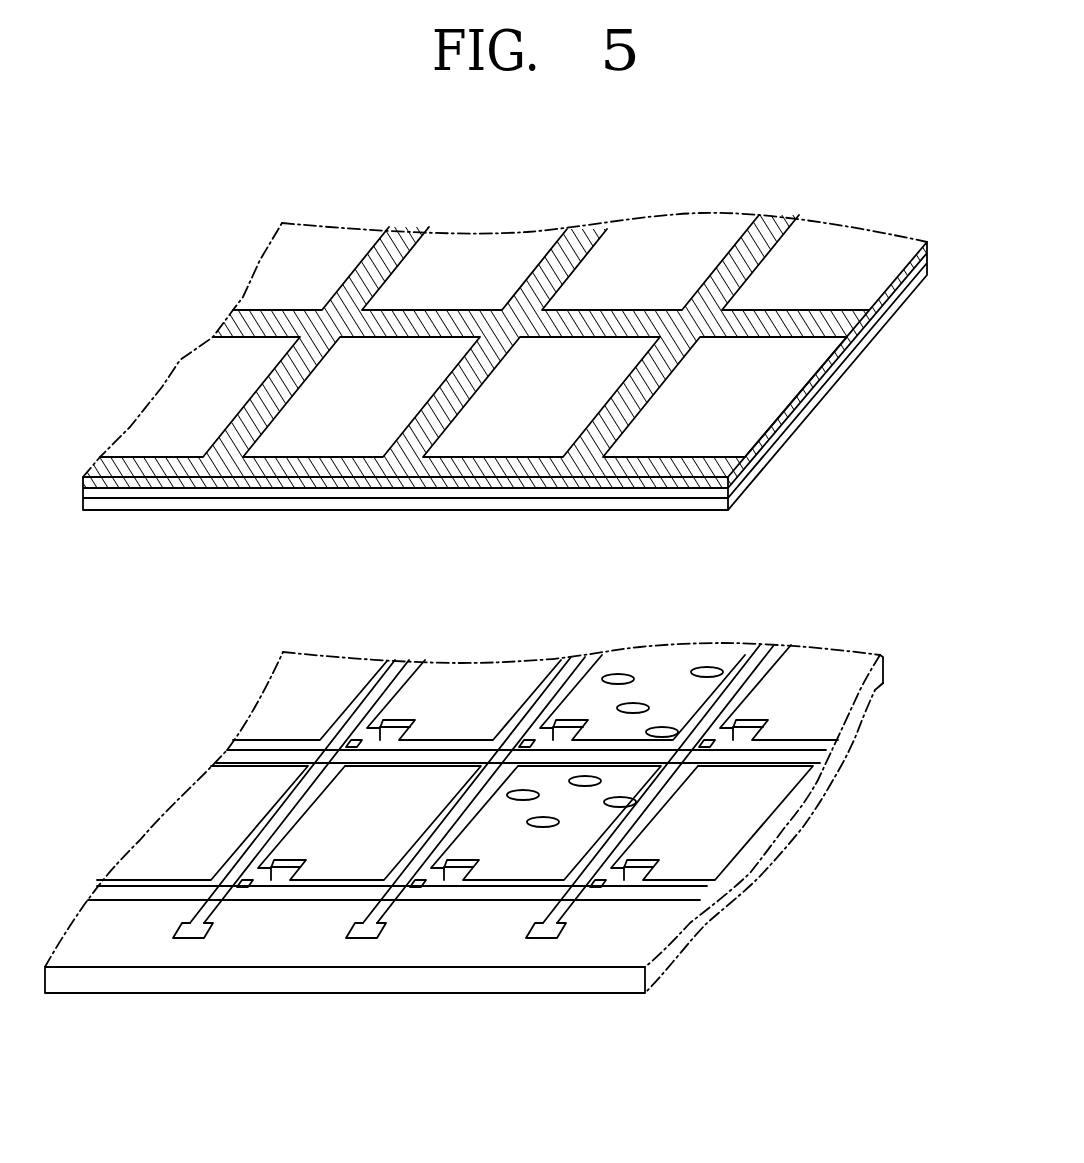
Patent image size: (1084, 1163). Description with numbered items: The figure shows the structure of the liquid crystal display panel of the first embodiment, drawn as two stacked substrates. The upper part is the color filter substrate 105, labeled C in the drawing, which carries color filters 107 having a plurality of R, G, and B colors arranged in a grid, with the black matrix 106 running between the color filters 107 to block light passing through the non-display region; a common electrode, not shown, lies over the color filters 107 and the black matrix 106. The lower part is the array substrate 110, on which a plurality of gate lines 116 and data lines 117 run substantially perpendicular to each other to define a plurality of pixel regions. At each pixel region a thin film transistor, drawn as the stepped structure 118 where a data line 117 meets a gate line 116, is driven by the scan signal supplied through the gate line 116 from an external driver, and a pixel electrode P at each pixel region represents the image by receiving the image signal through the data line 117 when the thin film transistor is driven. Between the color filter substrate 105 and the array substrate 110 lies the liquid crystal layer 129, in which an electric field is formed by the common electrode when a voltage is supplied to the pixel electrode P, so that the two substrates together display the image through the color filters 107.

The color filter substrate C is at (178, 347).
The color filter substrate 105 is at (700, 495).
The black matrix 106 is at (717, 467).
The color filters 107 is at (782, 375).
The array substrate 110 is at (455, 985).
The gate lines 116 is at (518, 898).
The data lines 117 is at (387, 903).
The thin film transistor 118 is at (595, 853).
The liquid crystal layer 129 is at (635, 708).
The pixel electrode P is at (705, 828).